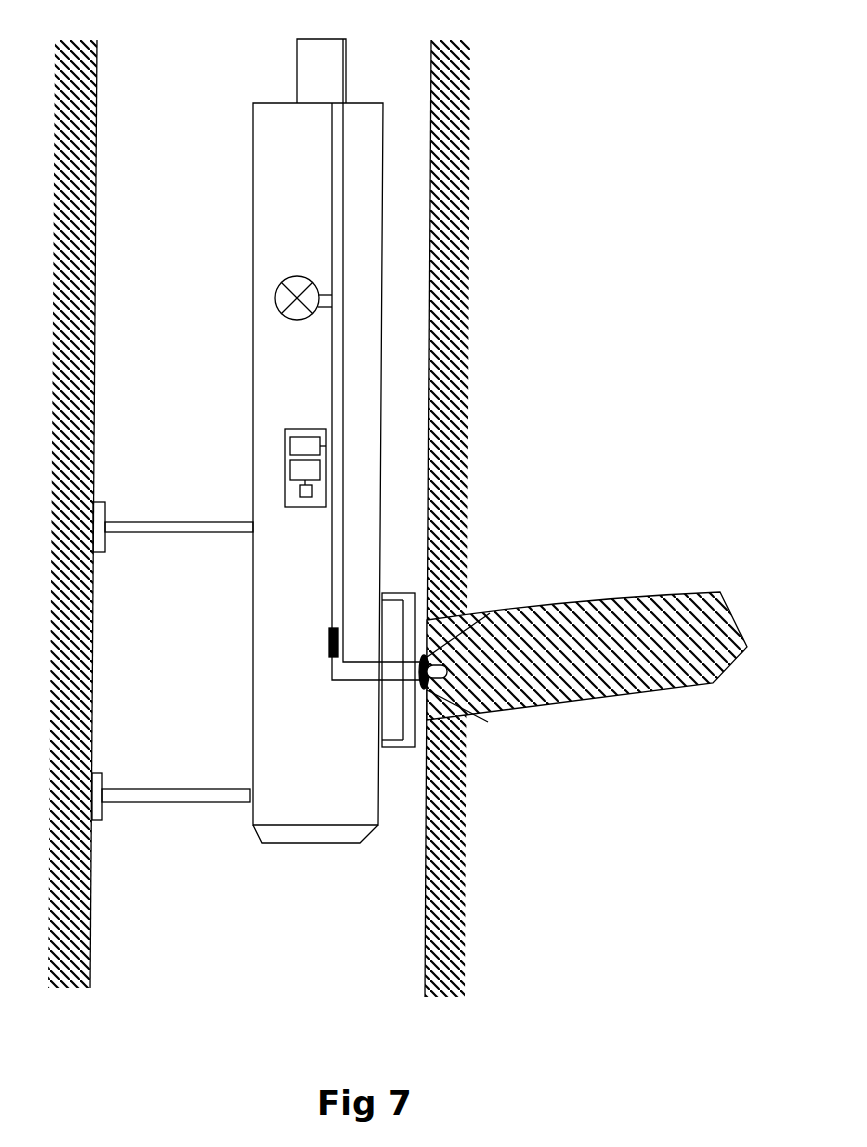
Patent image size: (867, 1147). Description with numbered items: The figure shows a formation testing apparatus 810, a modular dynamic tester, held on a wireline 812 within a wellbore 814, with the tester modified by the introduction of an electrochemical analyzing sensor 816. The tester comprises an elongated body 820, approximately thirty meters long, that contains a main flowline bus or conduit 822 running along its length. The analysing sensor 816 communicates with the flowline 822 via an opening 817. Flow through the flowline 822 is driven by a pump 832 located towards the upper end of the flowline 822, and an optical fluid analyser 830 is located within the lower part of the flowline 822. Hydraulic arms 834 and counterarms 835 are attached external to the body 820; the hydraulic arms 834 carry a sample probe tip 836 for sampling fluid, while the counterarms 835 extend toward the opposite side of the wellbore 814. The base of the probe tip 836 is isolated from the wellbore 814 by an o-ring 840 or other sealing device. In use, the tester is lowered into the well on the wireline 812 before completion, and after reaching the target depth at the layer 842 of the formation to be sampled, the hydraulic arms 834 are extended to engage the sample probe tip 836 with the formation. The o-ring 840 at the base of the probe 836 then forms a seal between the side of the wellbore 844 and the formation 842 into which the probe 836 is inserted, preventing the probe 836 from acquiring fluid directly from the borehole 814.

The formation testing apparatus 810 is at (213, 106).
The wireline 812 is at (340, 80).
The wellbore 814 is at (233, 937).
The electrochemical analyzing sensor 816 is at (284, 450).
The opening 817 is at (323, 444).
The body 820 is at (252, 642).
The main flowline bus or conduit 822 is at (332, 227).
The optical fluid analyser 830 is at (325, 644).
The pump 832 is at (275, 299).
The hydraulic arms 834 is at (397, 593).
The counterarms 835 is at (173, 803).
The sample probe tip 836 is at (478, 686).
The o-ring 840 is at (432, 612).
The formation layer 842 is at (568, 598).
The side of the wellbore 844 is at (425, 888).